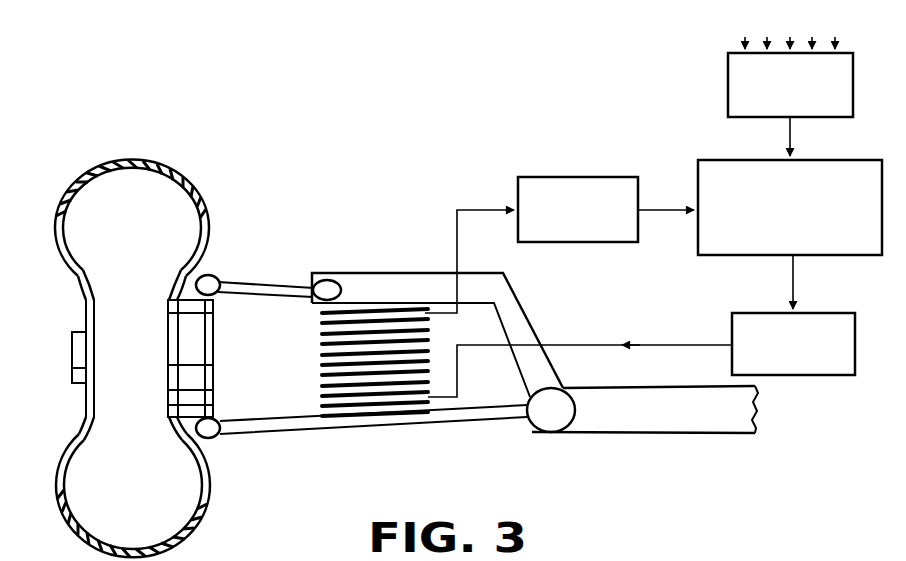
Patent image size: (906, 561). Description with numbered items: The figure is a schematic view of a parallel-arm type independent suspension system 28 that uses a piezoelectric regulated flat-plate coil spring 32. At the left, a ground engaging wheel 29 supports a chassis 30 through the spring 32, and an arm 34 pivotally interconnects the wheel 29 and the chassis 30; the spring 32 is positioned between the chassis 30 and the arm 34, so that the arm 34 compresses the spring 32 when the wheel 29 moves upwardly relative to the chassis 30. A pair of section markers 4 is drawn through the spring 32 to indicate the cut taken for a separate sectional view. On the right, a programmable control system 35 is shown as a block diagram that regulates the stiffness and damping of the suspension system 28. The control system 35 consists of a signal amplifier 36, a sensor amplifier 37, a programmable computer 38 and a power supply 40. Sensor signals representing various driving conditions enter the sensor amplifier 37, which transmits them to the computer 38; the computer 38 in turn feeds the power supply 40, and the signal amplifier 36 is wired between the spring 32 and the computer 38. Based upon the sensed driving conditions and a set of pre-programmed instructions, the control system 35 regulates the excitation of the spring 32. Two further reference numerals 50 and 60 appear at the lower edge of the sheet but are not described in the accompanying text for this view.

The parallel-arm type independent suspension system 28 is at (345, 125).
The ground engaging wheel 29 is at (145, 160).
The chassis 30 is at (625, 425).
The piezoelectric regulated flat-plate coil spring 32 is at (322, 375).
The arm 34 is at (303, 430).
The programmable control system 35 is at (612, 128).
The signal amplifier 36 is at (535, 182).
The sensor amplifier 37 is at (728, 107).
The programmable computer 38 is at (718, 248).
The power supply 40 is at (800, 375).
The section line 4- 4 is at (310, 343).
The element 50 is at (778, 560).
The element 60 is at (844, 553).